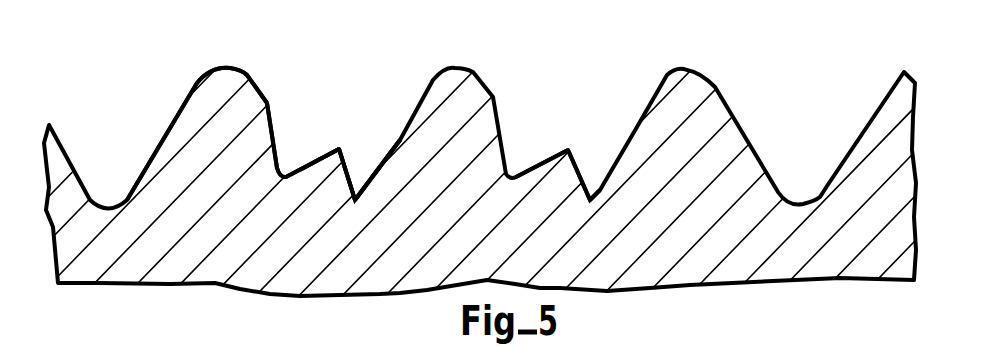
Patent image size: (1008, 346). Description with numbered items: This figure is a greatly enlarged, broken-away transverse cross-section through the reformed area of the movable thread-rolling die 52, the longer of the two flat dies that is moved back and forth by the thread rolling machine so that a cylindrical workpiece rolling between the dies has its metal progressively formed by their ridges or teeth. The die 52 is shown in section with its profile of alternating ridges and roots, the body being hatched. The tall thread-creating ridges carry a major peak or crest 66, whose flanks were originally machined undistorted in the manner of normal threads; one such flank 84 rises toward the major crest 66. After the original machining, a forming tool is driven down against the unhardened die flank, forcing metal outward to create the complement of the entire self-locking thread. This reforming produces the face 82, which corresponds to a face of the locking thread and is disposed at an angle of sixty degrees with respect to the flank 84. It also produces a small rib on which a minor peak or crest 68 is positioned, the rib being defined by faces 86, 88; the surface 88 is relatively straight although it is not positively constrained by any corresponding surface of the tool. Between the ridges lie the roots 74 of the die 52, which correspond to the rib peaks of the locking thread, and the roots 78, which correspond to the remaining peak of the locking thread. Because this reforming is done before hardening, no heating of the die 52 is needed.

The die 52 is at (773, 268).
The major peak or crest 66 is at (238, 68).
The flank 84 is at (165, 139).
The face 82 is at (283, 170).
The root 74 is at (290, 172).
The face 86 is at (321, 157).
The minor peak or crest 68 is at (343, 150).
The surface 88 is at (356, 192).
The root 78 is at (358, 197).